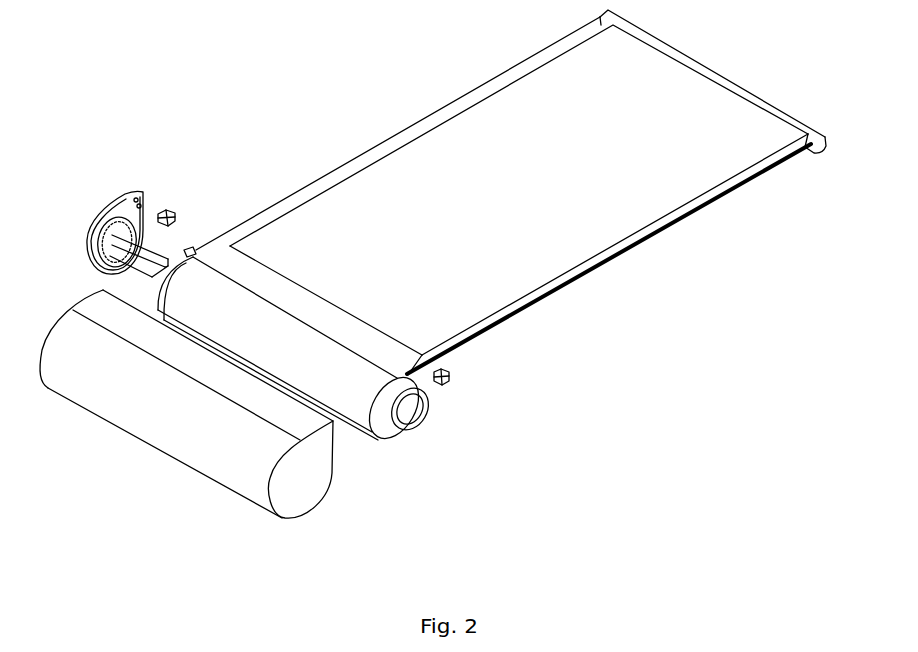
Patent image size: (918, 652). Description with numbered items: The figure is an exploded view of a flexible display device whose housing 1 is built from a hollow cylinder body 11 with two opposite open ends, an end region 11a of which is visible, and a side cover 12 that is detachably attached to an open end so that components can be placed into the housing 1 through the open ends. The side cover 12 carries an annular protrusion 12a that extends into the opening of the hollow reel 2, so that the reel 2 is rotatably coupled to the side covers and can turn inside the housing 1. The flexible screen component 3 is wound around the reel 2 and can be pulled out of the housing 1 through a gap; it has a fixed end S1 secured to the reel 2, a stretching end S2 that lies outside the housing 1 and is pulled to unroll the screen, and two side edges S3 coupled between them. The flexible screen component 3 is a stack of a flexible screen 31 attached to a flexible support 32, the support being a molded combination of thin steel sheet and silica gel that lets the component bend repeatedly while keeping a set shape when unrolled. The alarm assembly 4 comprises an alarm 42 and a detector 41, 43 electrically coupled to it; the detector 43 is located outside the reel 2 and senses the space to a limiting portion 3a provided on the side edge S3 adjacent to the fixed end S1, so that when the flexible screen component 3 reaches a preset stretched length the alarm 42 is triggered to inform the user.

The housing 1 is at (229, 356).
The cylinder body 11 is at (198, 415).
The end portion of housing 11a is at (293, 489).
The side cover 12 is at (95, 220).
The annular protrusion 12a is at (99, 262).
The reel 2 is at (412, 432).
The flexible screen component 3 is at (542, 215).
The limiting portion 3a is at (477, 392).
The flexible screen 31 is at (637, 218).
The flexible support 32 is at (647, 254).
The alarm assembly 4 is at (183, 201).
The detector 41 is at (181, 193).
The alarm 42 is at (190, 247).
The detector 43 is at (452, 377).
The fixed end S1 is at (376, 432).
The stretching end S2 is at (823, 152).
The side edge S3 is at (567, 283).